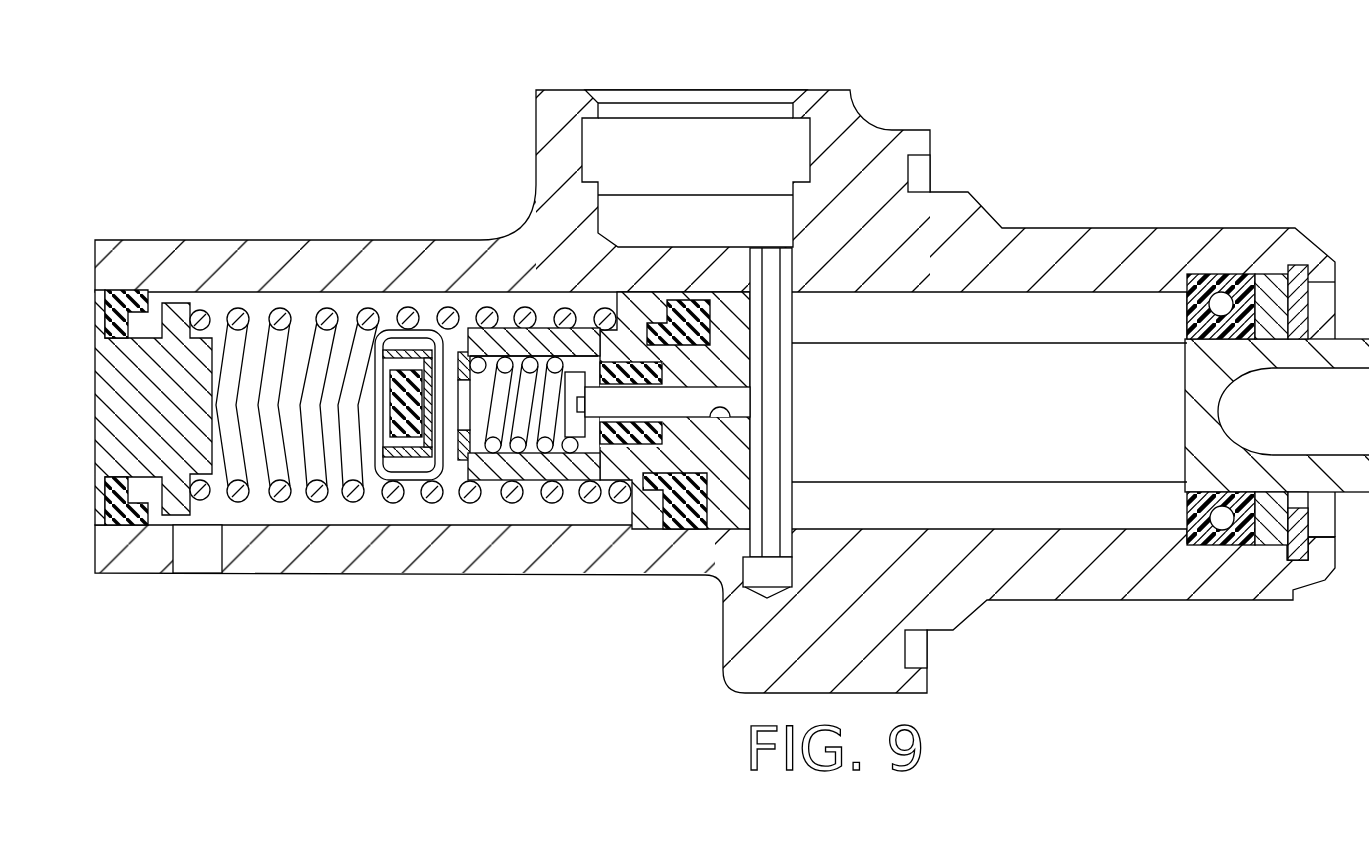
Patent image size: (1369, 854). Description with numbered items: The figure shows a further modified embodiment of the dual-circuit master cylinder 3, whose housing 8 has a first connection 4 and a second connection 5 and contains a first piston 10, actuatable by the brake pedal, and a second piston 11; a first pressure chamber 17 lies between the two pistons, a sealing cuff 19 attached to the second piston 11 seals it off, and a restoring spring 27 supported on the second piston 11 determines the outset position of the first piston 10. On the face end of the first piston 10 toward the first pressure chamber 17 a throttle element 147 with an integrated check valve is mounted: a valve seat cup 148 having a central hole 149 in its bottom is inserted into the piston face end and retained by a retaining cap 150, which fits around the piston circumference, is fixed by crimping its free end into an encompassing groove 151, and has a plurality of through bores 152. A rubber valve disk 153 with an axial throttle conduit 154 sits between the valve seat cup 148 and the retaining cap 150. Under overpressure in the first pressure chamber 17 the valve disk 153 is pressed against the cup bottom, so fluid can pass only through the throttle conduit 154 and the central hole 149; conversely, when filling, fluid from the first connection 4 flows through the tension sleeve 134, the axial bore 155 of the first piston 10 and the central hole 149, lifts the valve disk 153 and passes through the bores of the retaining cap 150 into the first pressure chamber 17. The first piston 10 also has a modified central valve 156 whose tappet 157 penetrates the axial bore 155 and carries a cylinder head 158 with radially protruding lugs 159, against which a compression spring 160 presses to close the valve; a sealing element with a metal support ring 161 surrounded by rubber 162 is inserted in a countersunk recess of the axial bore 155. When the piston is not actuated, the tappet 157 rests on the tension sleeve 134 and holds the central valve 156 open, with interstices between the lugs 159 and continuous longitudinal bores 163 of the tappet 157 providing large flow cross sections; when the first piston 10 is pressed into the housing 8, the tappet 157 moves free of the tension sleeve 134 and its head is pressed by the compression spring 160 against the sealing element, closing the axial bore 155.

The master cylinder 3 is at (350, 196).
The first connection 4 is at (770, 140).
The second connection 5 is at (198, 555).
The housing 8 is at (213, 247).
The first piston 10 is at (632, 453).
The second piston 11 is at (110, 453).
The first pressure chamber 17 is at (547, 515).
The sealing cuff 19 is at (124, 300).
The restoring spring 27 is at (484, 330).
The tension sleeve 134 is at (790, 516).
The throttle element 147 is at (408, 455).
The valve seat cup 148 is at (450, 455).
The central hole 149 is at (420, 352).
The retaining cap 150 is at (400, 470).
The encompassing groove 151 is at (462, 312).
The through bores 152 is at (378, 465).
The rubber valve disk 153 is at (397, 348).
The axial throttle conduit 154 is at (380, 340).
The axial bore 155 is at (775, 425).
The central valve 156 is at (590, 460).
The tappet 157 is at (738, 398).
The cylinder head 158 is at (576, 368).
The radially protruding lugs 159 is at (575, 368).
The compression spring 160 is at (507, 480).
The metal support ring 161 is at (663, 455).
The rubber 162 is at (700, 487).
The longitudinal bores 163 is at (730, 410).